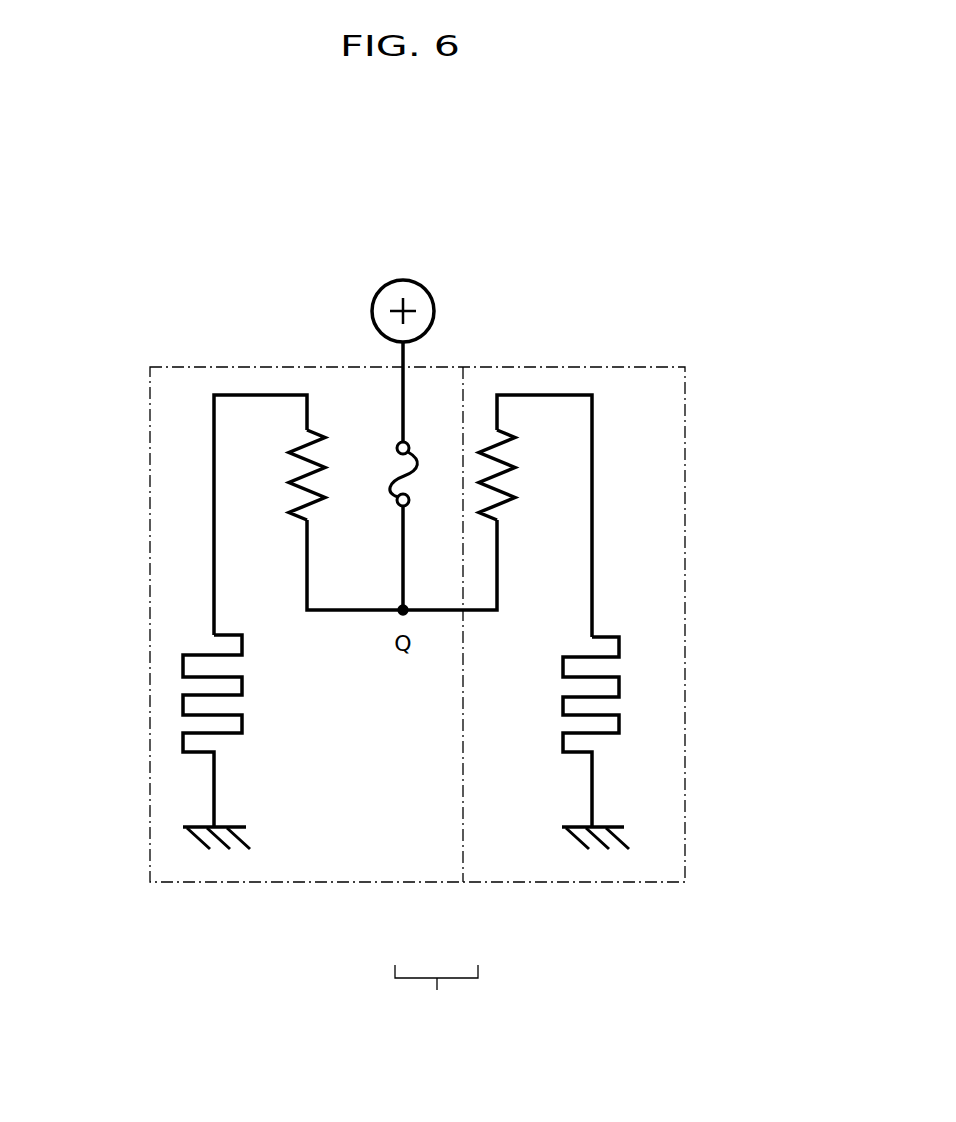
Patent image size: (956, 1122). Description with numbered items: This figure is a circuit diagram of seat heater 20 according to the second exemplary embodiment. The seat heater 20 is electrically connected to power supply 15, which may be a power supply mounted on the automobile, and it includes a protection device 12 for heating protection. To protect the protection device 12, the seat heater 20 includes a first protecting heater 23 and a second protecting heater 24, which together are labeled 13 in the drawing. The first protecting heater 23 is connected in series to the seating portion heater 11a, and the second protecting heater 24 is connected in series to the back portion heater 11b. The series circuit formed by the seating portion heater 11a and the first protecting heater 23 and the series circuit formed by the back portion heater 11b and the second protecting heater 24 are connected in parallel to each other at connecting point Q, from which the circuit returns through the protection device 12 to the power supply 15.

The seat heater 20 is at (685, 250).
The power supply 15 is at (416, 284).
The protection device 12 is at (427, 458).
The first protecting heater 23 is at (315, 522).
The second protecting heater 24 is at (485, 530).
The heater 13 is at (436, 1001).
The seating portion heater 11a is at (183, 707).
The back portion heater 11b is at (619, 697).